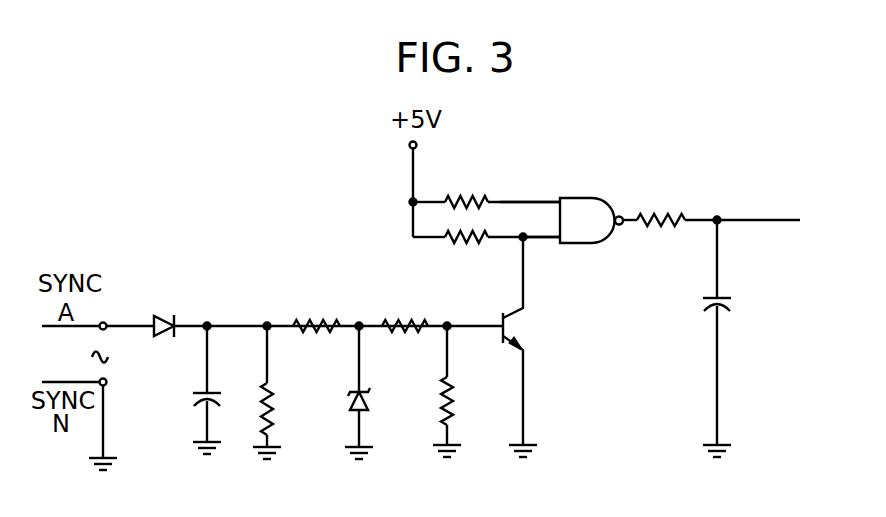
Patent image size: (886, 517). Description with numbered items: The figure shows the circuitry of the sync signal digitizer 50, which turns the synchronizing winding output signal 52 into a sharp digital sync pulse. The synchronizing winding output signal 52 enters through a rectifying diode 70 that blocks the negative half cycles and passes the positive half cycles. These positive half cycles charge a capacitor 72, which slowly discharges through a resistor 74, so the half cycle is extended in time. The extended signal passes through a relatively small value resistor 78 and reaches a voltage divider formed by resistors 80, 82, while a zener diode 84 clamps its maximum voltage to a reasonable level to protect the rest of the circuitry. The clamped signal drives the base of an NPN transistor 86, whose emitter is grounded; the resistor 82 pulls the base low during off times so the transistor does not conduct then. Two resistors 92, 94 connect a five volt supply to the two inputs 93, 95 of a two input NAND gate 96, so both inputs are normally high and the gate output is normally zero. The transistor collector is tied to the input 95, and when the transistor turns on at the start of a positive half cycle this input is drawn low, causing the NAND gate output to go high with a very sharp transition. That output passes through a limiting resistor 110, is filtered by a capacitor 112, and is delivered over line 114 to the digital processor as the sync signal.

The sync signal digitizer 50 is at (300, 212).
The synchronizing winding output signal 52 is at (121, 364).
The rectifying diode 70 is at (161, 318).
The capacitor 72 is at (190, 398).
The resistor 74 is at (273, 407).
The resistor 78 is at (315, 322).
The resistor 80 is at (400, 322).
The resistor 82 is at (452, 407).
The zener diode 84 is at (363, 407).
The NPN transistor 86 is at (510, 330).
The resistor 92 is at (462, 195).
The NAND gate input 93 is at (527, 200).
The resistor 94 is at (438, 255).
The NAND gate input 95 is at (540, 238).
The two input NAND gate 96 is at (584, 208).
The limiting resistor 110 is at (670, 226).
The capacitor 112 is at (730, 305).
The line 114 is at (768, 220).